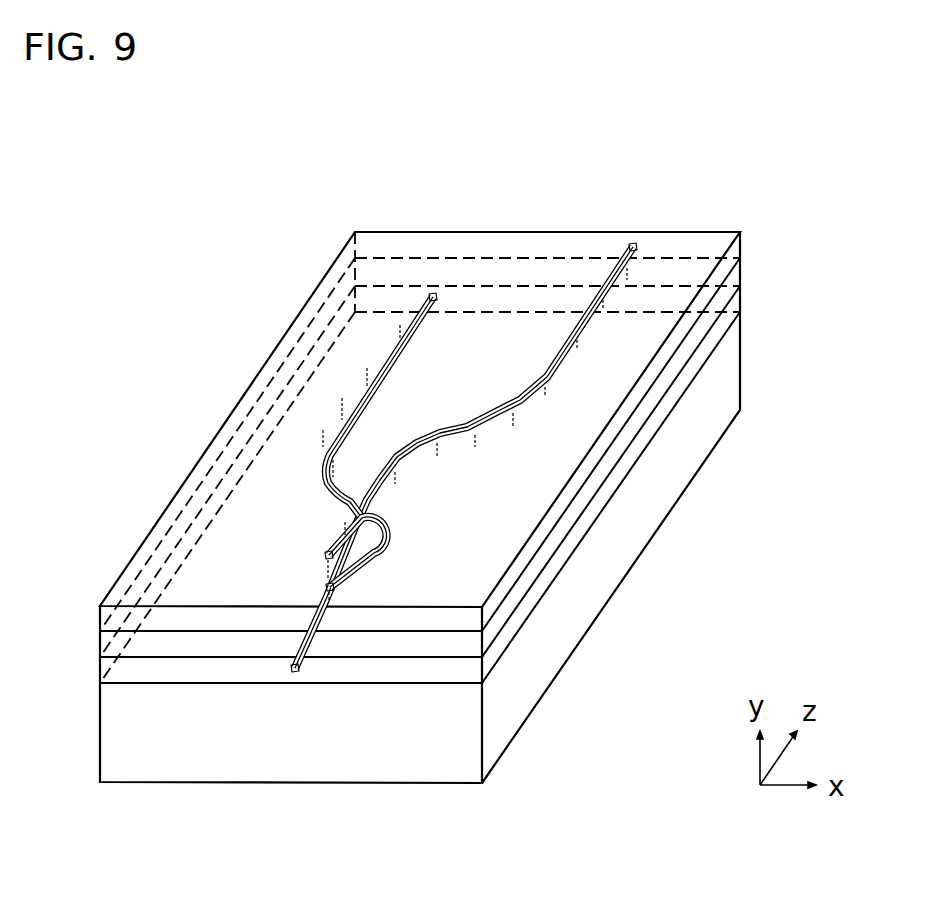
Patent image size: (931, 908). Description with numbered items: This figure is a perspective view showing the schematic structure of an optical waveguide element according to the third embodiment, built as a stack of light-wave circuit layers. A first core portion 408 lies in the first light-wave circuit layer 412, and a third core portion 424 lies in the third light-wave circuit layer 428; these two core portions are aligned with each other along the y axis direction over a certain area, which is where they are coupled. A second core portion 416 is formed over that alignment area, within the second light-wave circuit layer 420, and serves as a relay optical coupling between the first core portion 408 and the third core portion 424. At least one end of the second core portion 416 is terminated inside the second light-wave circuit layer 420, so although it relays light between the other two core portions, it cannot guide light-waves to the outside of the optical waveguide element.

The first core portion 408 is at (382, 358).
The third core portion 424 is at (555, 351).
The second core portion 416 is at (325, 584).
The third light-wave circuit layer 428 is at (617, 427).
The second light-wave circuit layer 420 is at (593, 486).
The first light-wave circuit layer 412 is at (570, 543).